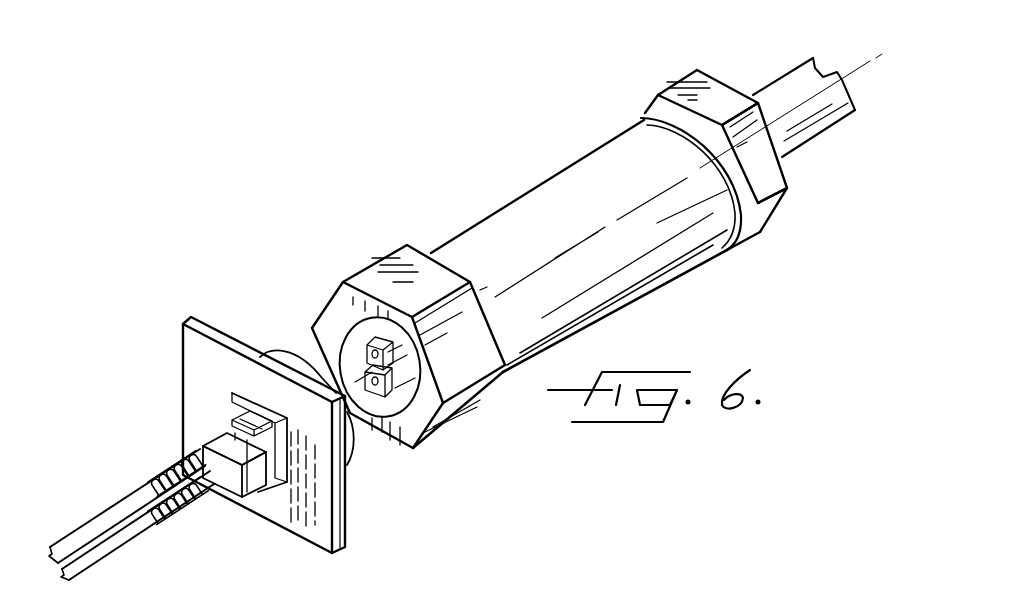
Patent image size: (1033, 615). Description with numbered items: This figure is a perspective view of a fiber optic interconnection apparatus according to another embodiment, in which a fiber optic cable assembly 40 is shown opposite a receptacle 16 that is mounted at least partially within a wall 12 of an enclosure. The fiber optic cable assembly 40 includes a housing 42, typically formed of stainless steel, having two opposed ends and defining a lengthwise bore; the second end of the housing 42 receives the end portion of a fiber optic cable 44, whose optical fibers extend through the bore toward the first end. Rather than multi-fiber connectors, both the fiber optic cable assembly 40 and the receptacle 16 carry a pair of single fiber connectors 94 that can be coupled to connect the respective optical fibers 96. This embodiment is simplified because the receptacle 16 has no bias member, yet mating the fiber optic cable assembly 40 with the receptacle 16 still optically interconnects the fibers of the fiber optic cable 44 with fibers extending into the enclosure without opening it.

The wall 12 is at (197, 327).
The receptacle 16 is at (276, 327).
The fiber optic cable assembly 40 is at (578, 233).
The housing 42 is at (645, 272).
The fiber optic cable 44 is at (798, 95).
The single fiber connectors 94 is at (243, 445).
The optical fibers 96 is at (98, 550).